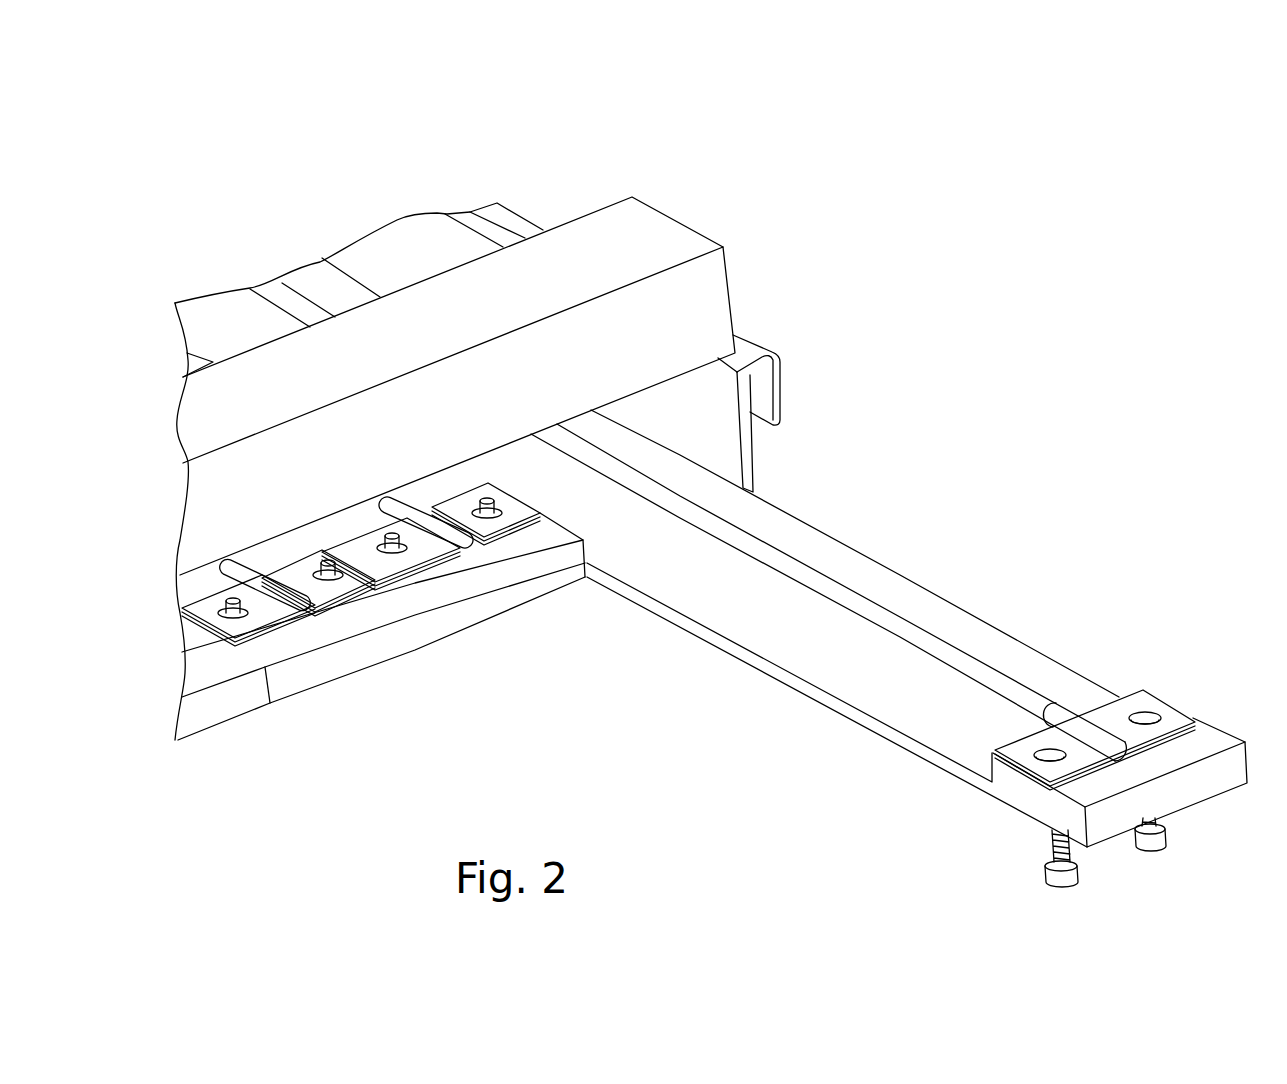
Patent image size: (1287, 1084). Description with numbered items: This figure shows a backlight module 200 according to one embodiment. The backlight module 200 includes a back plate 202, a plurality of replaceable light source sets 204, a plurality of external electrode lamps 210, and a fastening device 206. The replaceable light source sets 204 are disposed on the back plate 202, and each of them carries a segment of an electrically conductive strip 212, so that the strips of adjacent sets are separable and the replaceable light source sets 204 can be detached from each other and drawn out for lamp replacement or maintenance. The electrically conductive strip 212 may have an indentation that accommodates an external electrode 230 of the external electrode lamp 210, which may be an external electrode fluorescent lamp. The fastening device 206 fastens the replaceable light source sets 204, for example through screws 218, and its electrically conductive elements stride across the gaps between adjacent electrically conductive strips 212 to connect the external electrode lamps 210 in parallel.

The backlight module 200 is at (1065, 127).
The back plate 202 is at (763, 397).
The replaceable light source set 204 is at (924, 772).
The fastening device 206 is at (704, 306).
The external electrode lamp 210 is at (778, 565).
The electrically conductive strip 212 is at (425, 548).
The screw 218 is at (1043, 864).
The external electrode 230 is at (1060, 712).